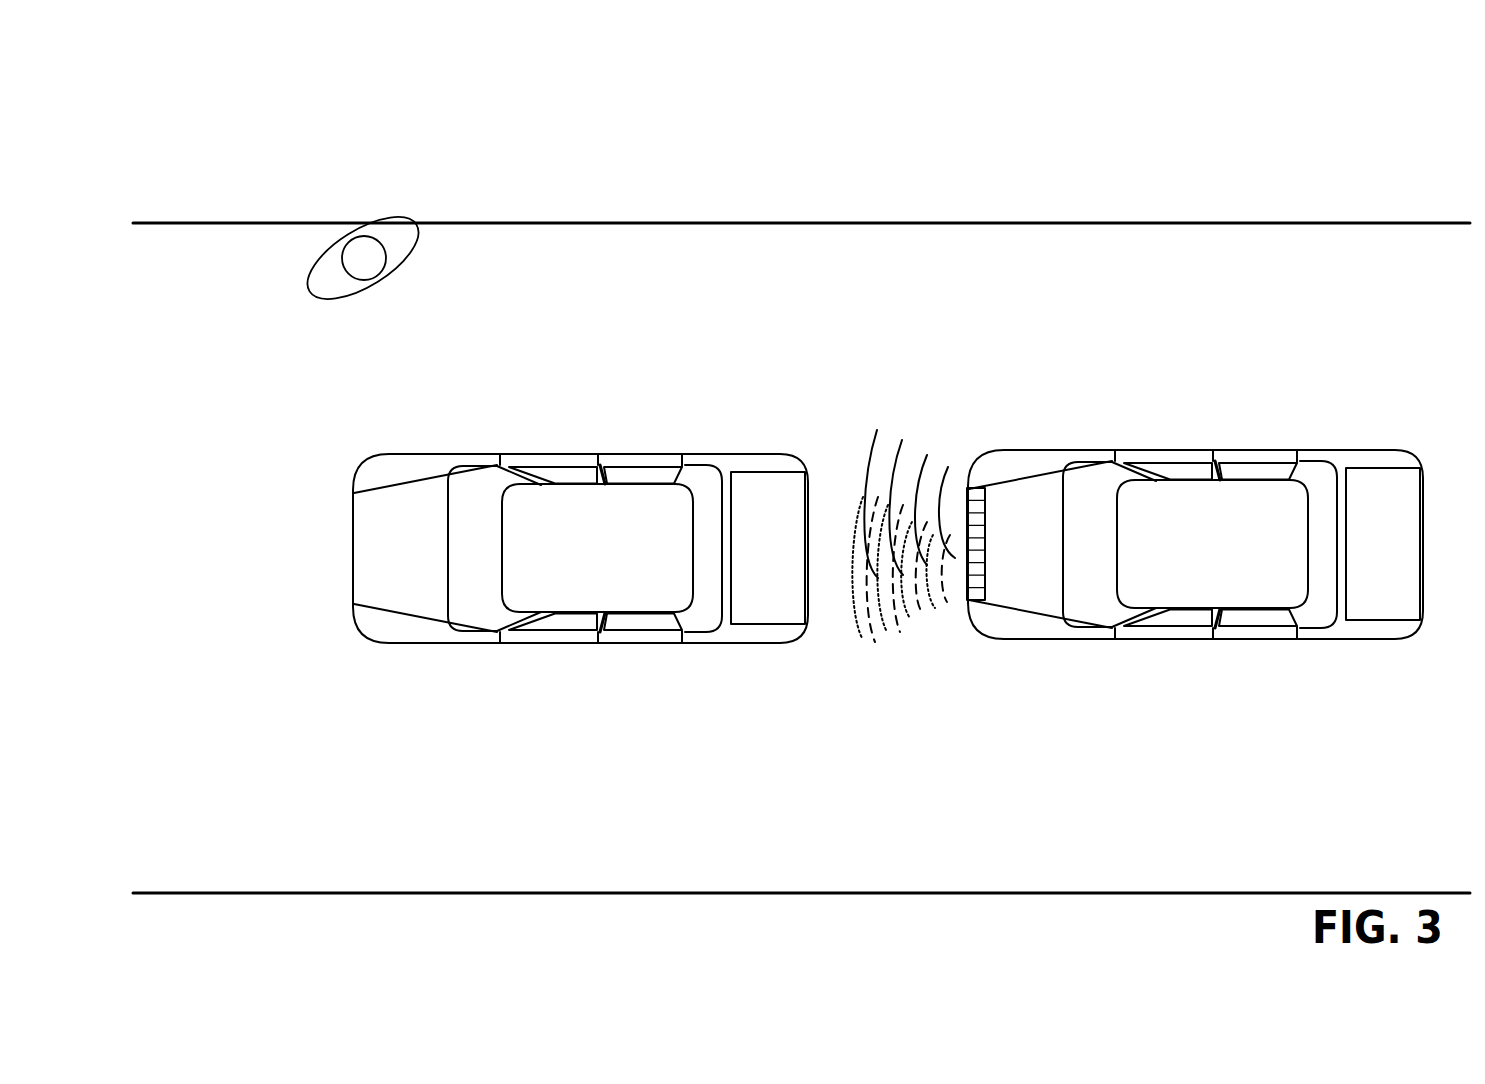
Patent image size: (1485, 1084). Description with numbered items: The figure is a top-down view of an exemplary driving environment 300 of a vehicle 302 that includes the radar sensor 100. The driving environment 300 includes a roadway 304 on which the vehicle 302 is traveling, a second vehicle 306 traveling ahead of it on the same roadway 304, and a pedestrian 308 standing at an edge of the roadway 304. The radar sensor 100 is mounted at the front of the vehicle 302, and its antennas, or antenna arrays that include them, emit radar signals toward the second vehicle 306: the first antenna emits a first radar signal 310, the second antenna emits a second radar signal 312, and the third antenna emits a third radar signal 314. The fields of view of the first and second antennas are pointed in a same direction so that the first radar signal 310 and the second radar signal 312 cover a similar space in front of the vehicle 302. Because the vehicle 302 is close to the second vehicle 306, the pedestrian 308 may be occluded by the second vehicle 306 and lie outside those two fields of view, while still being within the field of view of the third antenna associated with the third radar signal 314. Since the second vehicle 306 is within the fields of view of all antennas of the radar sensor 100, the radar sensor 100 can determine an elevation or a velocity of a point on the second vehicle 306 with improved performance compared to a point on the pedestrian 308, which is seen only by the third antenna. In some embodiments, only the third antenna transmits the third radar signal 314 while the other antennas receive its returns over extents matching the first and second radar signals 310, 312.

The driving environment 300 is at (190, 96).
The vehicle 302 is at (1250, 451).
The roadway 304 is at (705, 228).
The second vehicle 306 is at (352, 556).
The pedestrian 308 is at (350, 233).
The radar sensor 100 is at (984, 525).
The first radar signal 310 is at (923, 610).
The second radar signal 312 is at (861, 638).
The third radar signal 314 is at (897, 450).